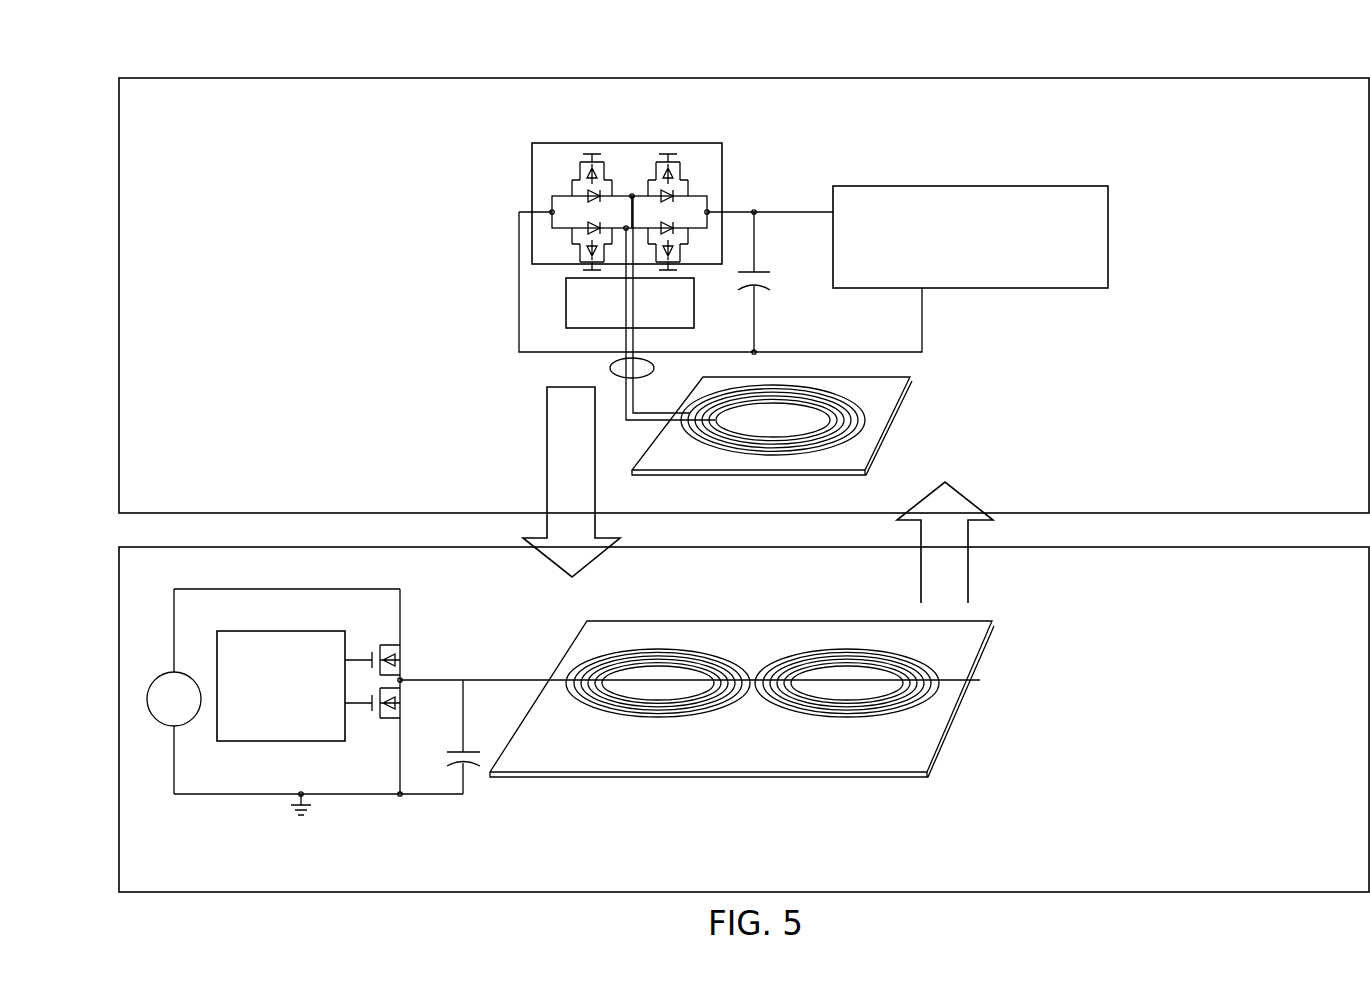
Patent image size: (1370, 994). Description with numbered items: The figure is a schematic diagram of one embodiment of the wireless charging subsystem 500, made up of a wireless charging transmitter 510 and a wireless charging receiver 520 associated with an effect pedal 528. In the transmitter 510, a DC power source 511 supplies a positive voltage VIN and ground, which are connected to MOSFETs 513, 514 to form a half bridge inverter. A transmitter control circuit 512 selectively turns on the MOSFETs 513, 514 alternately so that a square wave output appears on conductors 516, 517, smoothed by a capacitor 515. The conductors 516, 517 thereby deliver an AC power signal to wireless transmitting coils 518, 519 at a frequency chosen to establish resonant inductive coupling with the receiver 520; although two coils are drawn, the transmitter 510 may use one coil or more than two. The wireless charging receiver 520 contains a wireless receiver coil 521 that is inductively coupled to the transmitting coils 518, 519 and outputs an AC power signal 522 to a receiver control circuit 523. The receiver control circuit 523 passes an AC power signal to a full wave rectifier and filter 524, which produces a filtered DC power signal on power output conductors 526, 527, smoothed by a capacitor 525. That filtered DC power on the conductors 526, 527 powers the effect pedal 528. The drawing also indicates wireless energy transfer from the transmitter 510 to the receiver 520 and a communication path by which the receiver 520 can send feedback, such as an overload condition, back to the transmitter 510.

The wireless charging subsystem 500 is at (130, 50).
The wireless charging transmitter 510 is at (119, 688).
The DC power source 511 is at (163, 727).
The transmitter control circuit 512 is at (247, 742).
The MOSFET 513 is at (400, 647).
The MOSFET 514 is at (402, 697).
The capacitor 515 is at (475, 766).
The conductor 516 is at (453, 680).
The conductor 517 is at (497, 684).
The wireless transmitting coil 518 is at (658, 650).
The wireless transmitting coil 519 is at (853, 650).
The wireless charging receiver 520 is at (119, 243).
The wireless receiver coil 521 is at (867, 418).
The AC power signal 522 is at (608, 368).
The receiver control circuit 523 is at (565, 306).
The full wave rectifier and filter 524 is at (722, 153).
The capacitor 525 is at (770, 286).
The power output conductor 526 is at (770, 212).
The power output conductor 527 is at (815, 352).
The effect pedal 528 is at (1108, 237).